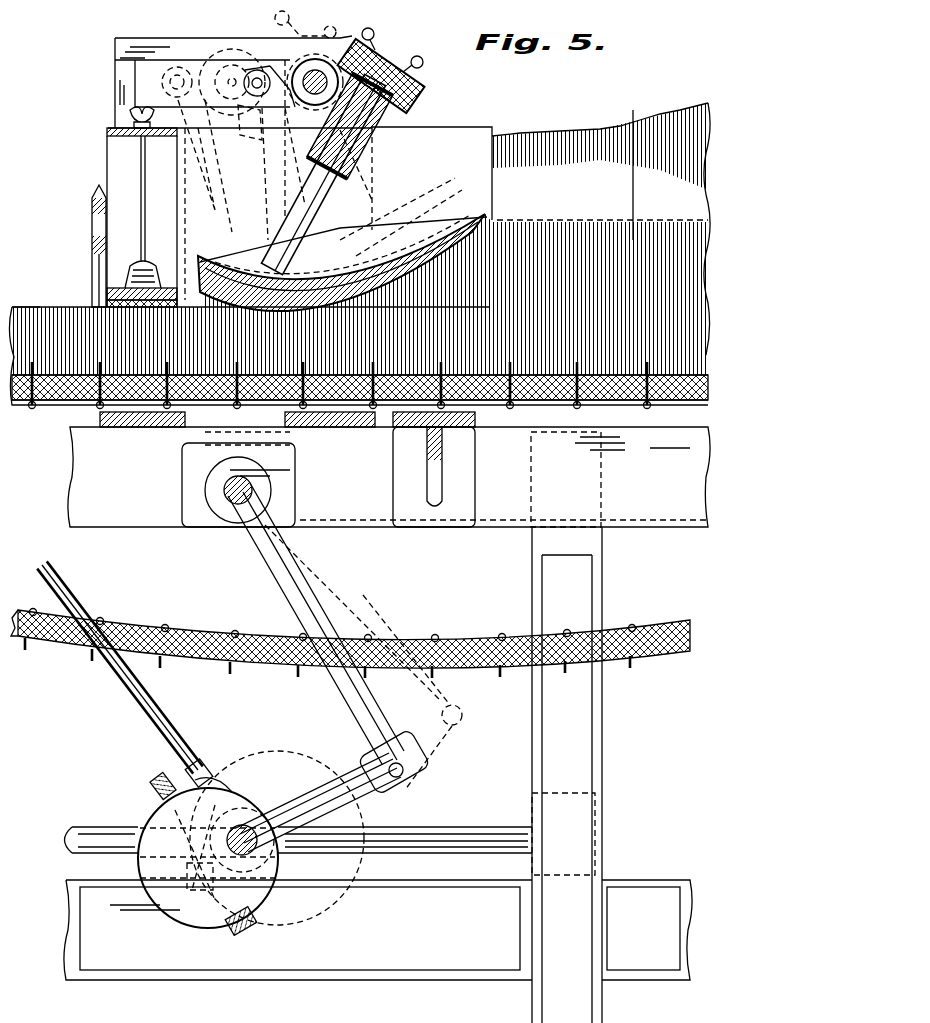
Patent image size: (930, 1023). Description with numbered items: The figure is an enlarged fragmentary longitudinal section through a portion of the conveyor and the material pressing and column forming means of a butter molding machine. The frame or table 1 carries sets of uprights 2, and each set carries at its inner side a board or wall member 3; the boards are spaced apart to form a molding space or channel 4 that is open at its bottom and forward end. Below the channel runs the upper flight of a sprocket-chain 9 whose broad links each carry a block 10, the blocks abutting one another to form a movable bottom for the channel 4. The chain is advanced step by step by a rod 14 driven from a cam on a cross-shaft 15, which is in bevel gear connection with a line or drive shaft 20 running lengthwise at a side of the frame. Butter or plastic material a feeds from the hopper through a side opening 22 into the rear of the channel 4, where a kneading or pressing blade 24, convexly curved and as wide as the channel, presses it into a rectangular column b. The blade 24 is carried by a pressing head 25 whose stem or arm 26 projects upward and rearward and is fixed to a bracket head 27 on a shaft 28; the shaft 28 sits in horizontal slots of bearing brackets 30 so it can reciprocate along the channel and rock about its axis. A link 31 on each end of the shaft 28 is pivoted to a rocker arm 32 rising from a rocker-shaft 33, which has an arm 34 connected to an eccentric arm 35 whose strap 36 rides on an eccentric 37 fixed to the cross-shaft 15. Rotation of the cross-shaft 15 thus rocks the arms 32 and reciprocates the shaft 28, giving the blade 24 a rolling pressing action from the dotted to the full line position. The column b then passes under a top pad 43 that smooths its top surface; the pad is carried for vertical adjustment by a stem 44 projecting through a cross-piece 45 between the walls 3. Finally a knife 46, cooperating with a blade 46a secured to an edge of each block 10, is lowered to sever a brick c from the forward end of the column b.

The frame or table 1 is at (645, 518).
The uprights 2 is at (126, 427).
The board or wall member 3 is at (462, 145).
The molding space or channel 4 is at (342, 226).
The sprocket-chain 9 is at (549, 410).
The block 10 is at (536, 388).
The rod 14 is at (156, 730).
The cross-shaft 15 is at (246, 826).
The line or drive shaft 20 is at (478, 842).
The side opening 22 is at (506, 222).
The kneading or pressing blade 24 is at (308, 292).
The pressing head 25 is at (378, 270).
The stem or arm 26 is at (318, 200).
The bracket head 27 is at (382, 122).
The shaft 28 is at (320, 72).
The bearing bracket 30 is at (195, 32).
The link 31 is at (273, 73).
The rocker arm 32 is at (213, 438).
The rocker-shaft 33 is at (252, 488).
The arm 34 is at (300, 588).
The eccentric arm 35 is at (318, 790).
The strap 36 is at (138, 860).
The eccentric 37 is at (162, 905).
The top pad 43 is at (160, 286).
The stem 44 is at (141, 202).
The cross-piece 45 is at (107, 131).
The knife 46 is at (93, 278).
The blade 46a is at (66, 407).
The butter or plastic material a is at (586, 248).
The column b is at (63, 307).
The brick c is at (14, 307).